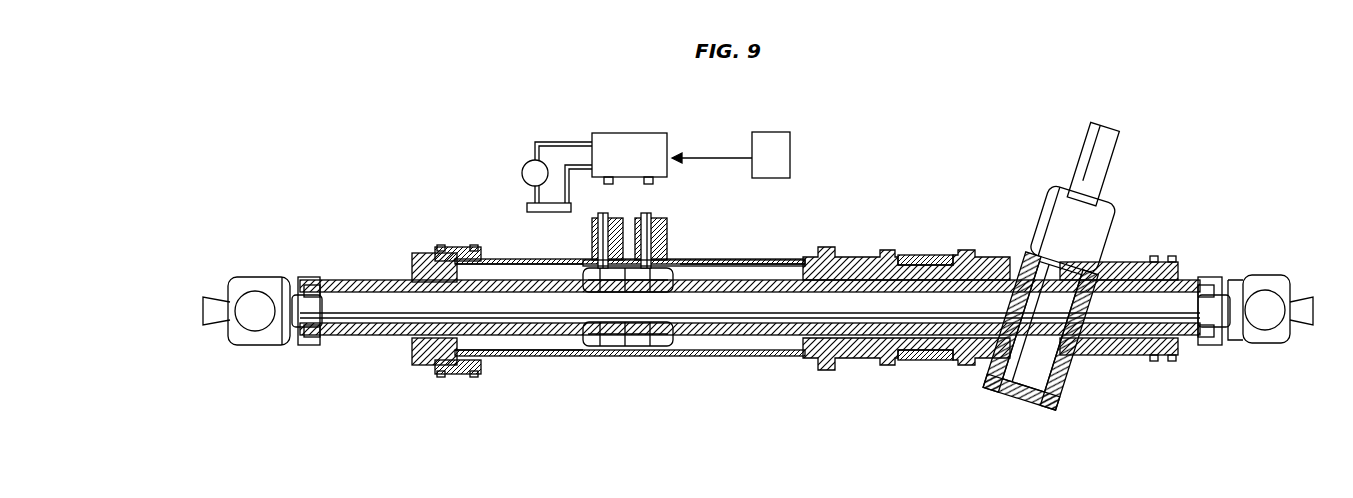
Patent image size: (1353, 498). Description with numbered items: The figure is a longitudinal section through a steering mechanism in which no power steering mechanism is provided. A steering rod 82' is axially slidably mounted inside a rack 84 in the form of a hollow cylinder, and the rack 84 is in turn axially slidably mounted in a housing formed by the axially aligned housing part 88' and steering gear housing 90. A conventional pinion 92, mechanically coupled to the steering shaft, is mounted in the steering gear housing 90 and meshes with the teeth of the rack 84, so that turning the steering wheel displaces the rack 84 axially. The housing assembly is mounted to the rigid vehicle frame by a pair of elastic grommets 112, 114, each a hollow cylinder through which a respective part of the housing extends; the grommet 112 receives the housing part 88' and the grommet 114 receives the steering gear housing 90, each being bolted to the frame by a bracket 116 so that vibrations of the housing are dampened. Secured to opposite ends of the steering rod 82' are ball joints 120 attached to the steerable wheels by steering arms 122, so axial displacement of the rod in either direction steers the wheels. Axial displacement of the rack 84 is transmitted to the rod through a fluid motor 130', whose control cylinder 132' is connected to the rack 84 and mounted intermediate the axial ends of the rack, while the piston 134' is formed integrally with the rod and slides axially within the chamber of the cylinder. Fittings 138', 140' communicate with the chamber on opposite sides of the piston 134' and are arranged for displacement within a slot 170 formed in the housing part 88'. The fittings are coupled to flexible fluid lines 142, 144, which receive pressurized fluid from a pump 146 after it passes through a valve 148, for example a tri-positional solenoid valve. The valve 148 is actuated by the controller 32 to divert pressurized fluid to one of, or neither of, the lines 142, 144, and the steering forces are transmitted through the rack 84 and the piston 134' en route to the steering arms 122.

The controller 32 is at (762, 133).
The steering rod 82' is at (761, 353).
The rack 84 is at (1150, 352).
The housing part 88' is at (630, 344).
The steering gear housing 90 is at (850, 362).
The pinion 92 is at (1082, 368).
The elastic grommet 112 is at (455, 250).
The elastic grommet 114 is at (930, 256).
The bracket 116 is at (920, 362).
The ball joint 120 is at (252, 278).
The steering arm 122 is at (208, 298).
The fluid motor 130' is at (604, 349).
The control cylinder 132' is at (628, 355).
The piston 134' is at (694, 236).
The fitting 138' is at (574, 240).
The fitting 140' is at (692, 227).
The flexible fluid line 142 is at (604, 213).
The flexible fluid line 144 is at (650, 213).
The pump 146 is at (523, 165).
The valve 148 is at (630, 133).
The slot 170 is at (782, 262).